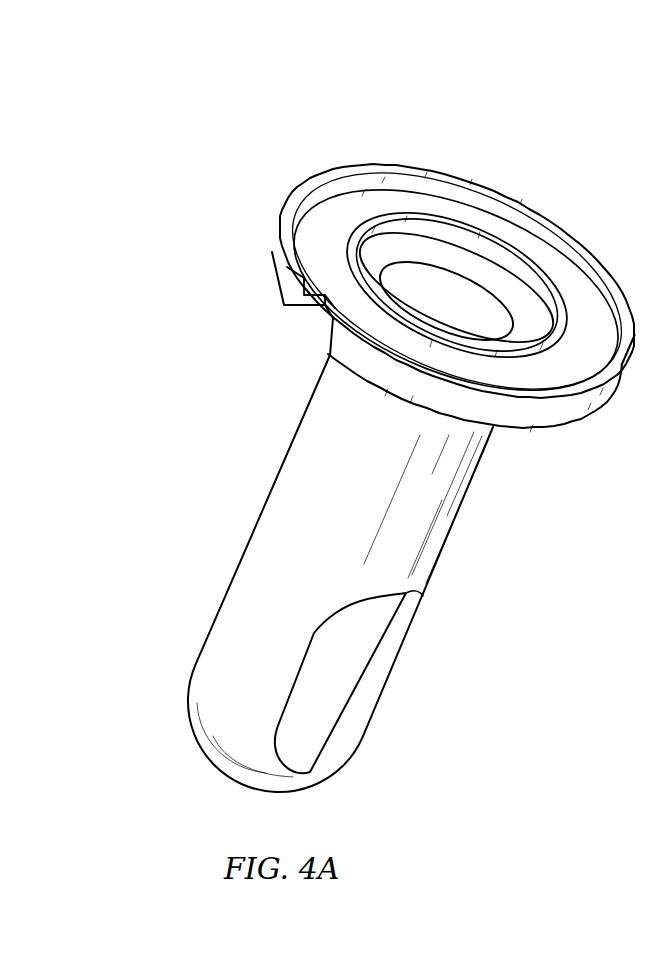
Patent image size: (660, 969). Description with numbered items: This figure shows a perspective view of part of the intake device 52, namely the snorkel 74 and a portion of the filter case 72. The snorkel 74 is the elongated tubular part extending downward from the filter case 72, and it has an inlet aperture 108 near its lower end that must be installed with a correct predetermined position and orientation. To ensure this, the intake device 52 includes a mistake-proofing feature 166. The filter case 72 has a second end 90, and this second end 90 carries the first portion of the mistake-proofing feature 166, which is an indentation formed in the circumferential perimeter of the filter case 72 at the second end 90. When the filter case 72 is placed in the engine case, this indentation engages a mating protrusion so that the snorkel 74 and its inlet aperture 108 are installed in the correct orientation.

The intake device 52 is at (574, 181).
The filter case 72 is at (355, 155).
The snorkel 74 is at (506, 480).
The second end 90 is at (270, 270).
The mistake-proofing feature 166 is at (300, 330).
The inlet aperture 108 is at (386, 718).